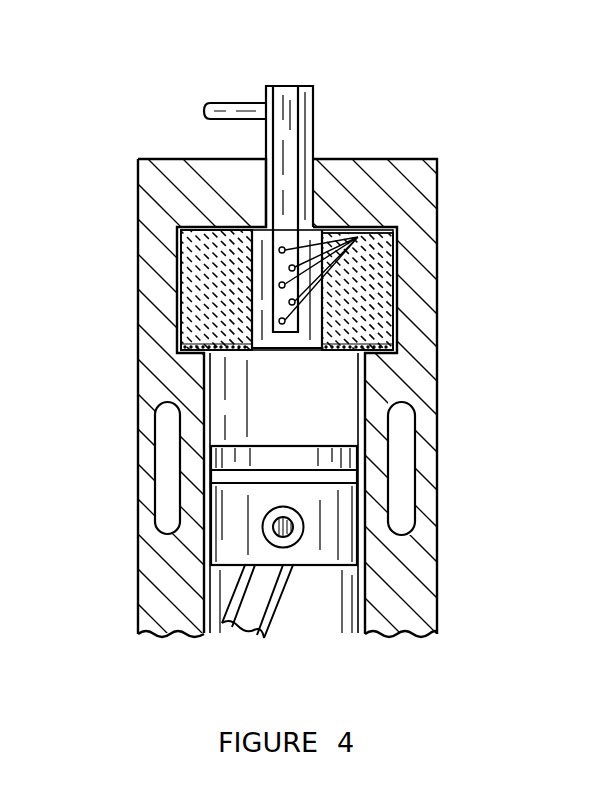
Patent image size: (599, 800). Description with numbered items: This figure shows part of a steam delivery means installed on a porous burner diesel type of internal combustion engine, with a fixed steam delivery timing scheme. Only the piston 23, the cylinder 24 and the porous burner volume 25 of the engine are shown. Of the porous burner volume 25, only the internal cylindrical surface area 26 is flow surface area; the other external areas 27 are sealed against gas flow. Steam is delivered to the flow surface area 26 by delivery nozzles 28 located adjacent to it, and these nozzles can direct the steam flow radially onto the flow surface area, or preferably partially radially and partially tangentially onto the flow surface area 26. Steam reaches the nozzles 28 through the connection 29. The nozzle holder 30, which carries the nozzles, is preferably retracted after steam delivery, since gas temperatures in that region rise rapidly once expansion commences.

The piston 23 is at (322, 533).
The cylinder 24 is at (300, 415).
The porous burner volume 25 is at (218, 290).
The internal cylindrical surface area 26 is at (318, 328).
The external areas 27 is at (222, 352).
The delivery nozzles 28 is at (360, 237).
The connection 29 is at (230, 103).
The nozzle holder 30 is at (182, 229).